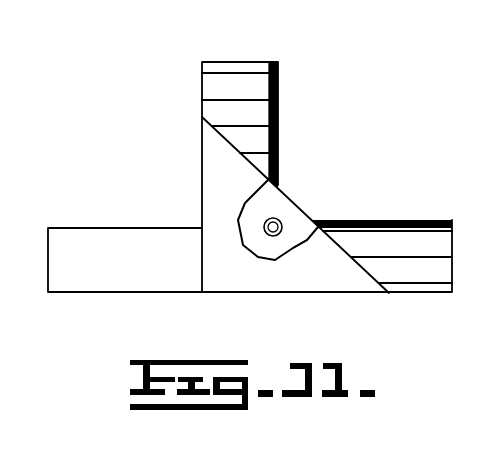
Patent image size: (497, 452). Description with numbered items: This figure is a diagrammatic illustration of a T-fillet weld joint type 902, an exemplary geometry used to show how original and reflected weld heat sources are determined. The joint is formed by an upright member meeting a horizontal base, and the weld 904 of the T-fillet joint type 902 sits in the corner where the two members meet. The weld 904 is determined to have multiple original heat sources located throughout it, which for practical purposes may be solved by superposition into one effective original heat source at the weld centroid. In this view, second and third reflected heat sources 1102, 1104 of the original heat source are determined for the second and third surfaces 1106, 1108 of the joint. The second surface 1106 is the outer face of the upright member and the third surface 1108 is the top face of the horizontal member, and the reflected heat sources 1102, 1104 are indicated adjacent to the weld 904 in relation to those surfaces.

The T-fillet weld joint type 902 is at (142, 78).
The weld 904 is at (240, 216).
The second reflected heat source 1102 is at (263, 224).
The third reflected heat source 1104 is at (283, 231).
The second surface 1106 is at (280, 105).
The third surface 1108 is at (408, 220).